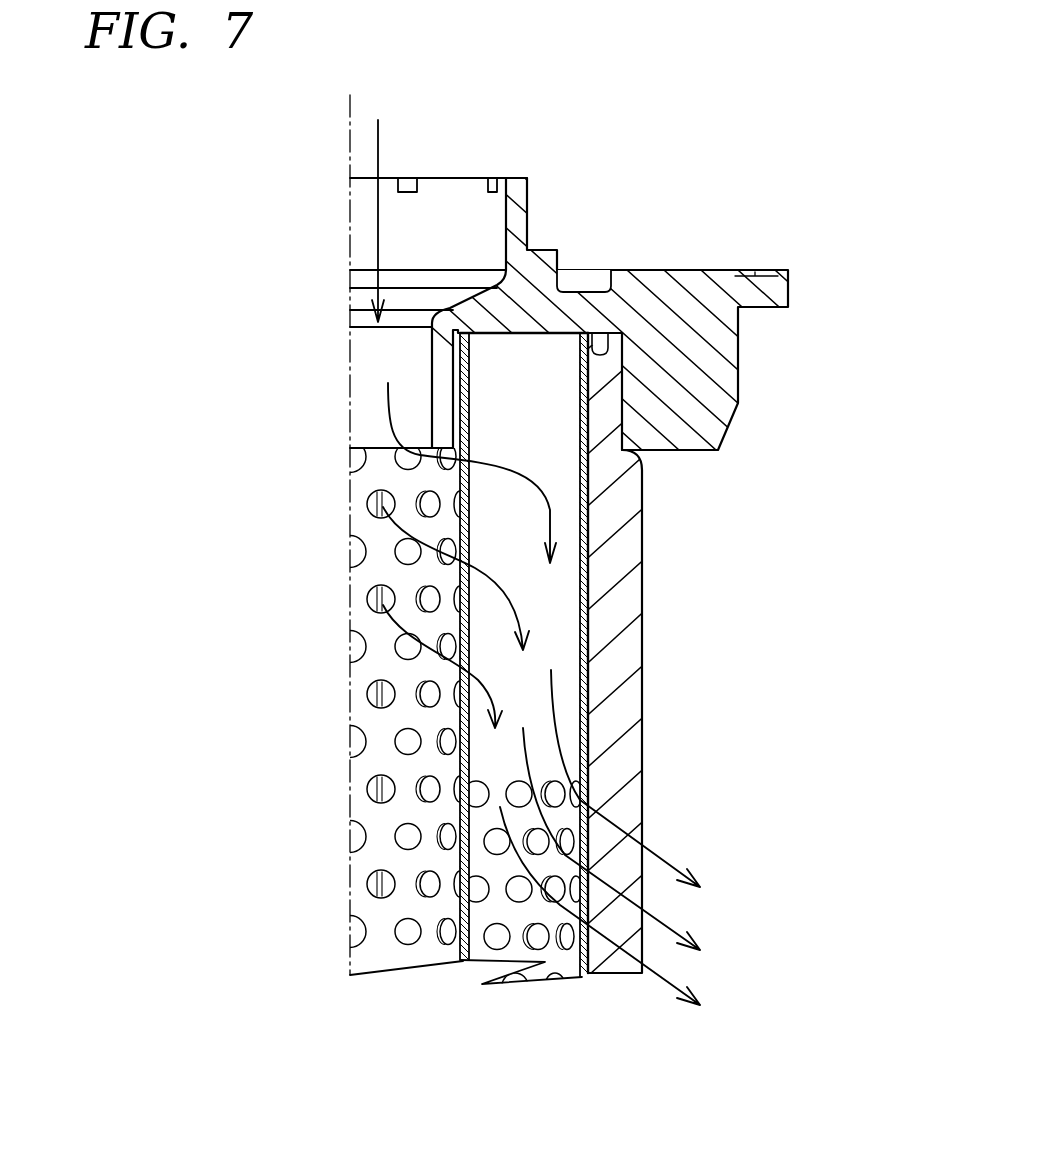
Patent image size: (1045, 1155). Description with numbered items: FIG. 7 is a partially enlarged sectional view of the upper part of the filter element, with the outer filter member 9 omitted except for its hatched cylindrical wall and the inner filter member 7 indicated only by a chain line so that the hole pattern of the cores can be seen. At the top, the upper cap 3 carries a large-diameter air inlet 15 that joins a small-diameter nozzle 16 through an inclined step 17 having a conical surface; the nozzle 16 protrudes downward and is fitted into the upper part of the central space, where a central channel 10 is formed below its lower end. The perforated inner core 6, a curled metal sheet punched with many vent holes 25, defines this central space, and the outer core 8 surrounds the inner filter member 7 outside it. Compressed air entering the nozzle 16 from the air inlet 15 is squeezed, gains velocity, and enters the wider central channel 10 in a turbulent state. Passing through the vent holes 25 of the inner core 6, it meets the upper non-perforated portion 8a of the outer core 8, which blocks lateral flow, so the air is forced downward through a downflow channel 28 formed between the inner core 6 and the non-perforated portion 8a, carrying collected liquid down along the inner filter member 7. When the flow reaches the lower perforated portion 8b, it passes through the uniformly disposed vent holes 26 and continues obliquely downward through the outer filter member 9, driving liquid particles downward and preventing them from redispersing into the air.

The upper cap 3 is at (681, 270).
The inner core 6 is at (352, 708).
The inner filter member 7 is at (523, 370).
The outer core 8 is at (557, 699).
The non-perforated portion 8a is at (556, 597).
The perforated portion 8b is at (562, 963).
The outer filter member 9 is at (613, 732).
The central channel 10 is at (352, 708).
The air inlet 15 is at (433, 213).
The nozzle 16 is at (366, 357).
The inclined step 17 is at (476, 318).
The vent holes 25 is at (402, 741).
The vent holes 26 is at (495, 940).
The downflow channel 28 is at (590, 653).